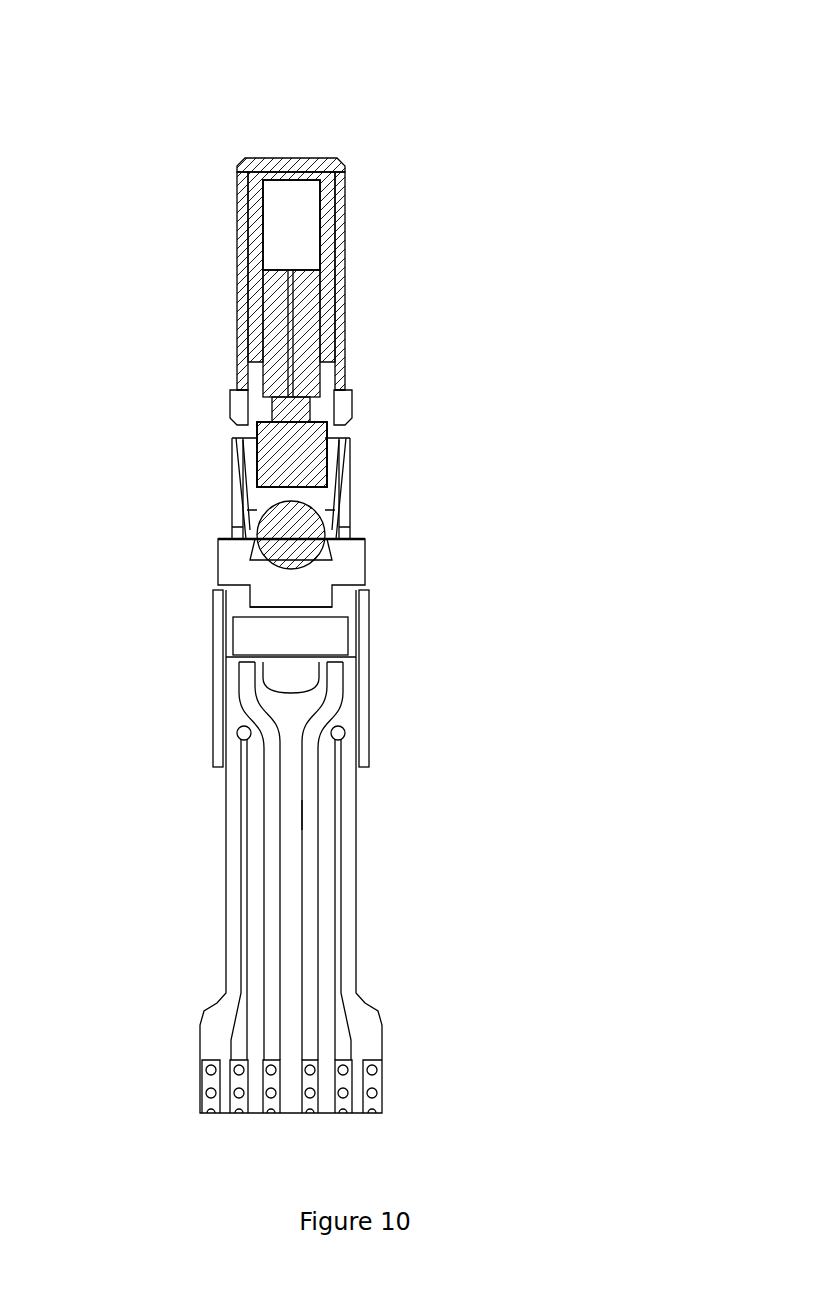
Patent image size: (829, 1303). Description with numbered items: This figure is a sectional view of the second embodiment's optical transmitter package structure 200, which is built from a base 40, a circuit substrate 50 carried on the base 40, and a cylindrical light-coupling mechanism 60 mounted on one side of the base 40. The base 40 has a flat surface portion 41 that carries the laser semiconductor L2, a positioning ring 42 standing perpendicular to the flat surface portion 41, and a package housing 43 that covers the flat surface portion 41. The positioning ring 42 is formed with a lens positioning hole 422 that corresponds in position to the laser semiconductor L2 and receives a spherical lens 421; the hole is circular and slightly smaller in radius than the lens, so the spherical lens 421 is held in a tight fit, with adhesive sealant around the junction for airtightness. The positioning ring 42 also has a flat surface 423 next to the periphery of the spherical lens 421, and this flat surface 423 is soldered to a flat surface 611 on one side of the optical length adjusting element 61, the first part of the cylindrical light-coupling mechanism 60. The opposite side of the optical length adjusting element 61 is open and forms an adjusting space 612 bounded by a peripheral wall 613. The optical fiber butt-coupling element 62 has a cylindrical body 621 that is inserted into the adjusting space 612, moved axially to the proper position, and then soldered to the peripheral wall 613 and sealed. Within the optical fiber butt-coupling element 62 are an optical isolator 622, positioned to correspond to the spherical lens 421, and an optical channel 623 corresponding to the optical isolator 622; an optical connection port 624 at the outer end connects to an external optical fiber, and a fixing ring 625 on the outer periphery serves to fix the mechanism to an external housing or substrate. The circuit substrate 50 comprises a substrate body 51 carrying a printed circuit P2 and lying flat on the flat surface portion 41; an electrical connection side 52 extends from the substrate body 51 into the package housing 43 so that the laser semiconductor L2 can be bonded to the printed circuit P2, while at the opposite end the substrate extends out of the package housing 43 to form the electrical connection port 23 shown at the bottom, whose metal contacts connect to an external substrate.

The optical transmitter package structure 200 is at (604, 99).
The cylindrical light-coupling mechanism 60 is at (238, 308).
The optical fiber butt-coupling element 62 is at (343, 228).
The cylindrical body 621 is at (237, 432).
The optical isolator 622 is at (348, 432).
The optical channel 623 is at (342, 285).
The optical connection port 624 is at (340, 160).
The fixing ring 625 is at (350, 397).
The optical length adjusting element 61 is at (232, 485).
The flat surface 611 is at (343, 533).
The adjusting space 612 is at (350, 488).
The peripheral wall 613 is at (352, 468).
The base 40 is at (217, 582).
The positioning ring 42 is at (222, 548).
The spherical lens 421 is at (335, 552).
The lens positioning hole 422 is at (243, 590).
The flat surface 423 is at (228, 538).
The package housing 43 is at (362, 628).
The flat surface portion 41 is at (230, 637).
The laser semiconductor L2 is at (255, 650).
The contact fingers 52 is at (360, 672).
The substrate body 51 is at (260, 880).
The printed circuit P2 is at (310, 815).
The circuit substrate 50 is at (355, 890).
The terminal pads 23 is at (383, 1080).